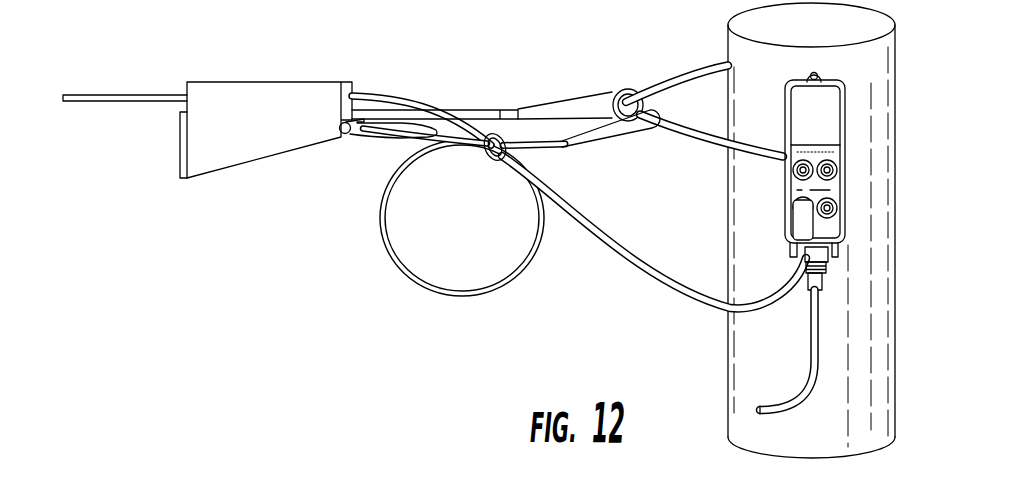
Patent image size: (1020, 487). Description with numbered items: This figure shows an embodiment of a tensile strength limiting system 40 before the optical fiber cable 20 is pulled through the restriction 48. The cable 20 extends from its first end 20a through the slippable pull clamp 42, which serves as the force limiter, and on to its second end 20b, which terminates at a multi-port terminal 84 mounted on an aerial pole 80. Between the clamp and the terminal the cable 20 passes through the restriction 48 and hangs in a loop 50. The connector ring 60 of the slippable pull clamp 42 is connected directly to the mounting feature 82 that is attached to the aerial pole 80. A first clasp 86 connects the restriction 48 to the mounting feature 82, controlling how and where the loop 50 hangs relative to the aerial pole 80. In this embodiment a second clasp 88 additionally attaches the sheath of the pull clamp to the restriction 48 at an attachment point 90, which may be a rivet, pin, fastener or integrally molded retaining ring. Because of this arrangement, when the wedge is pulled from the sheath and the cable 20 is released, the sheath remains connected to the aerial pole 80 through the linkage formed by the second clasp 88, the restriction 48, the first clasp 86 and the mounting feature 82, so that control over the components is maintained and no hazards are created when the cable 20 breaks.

The optical fiber cable 20 is at (410, 100).
The first end of optical fiber cable 20a is at (80, 95).
The second end of optical fiber cable 20b is at (806, 227).
The tensile strength limiting system 40 is at (584, 263).
The slippable pull clamp 42 is at (210, 135).
The restriction 48 is at (493, 134).
The loop 50 is at (443, 300).
The connector ring 60 is at (607, 89).
The aerial pole 80 is at (883, 330).
The mounting feature 82 is at (682, 70).
The multi-port terminal 84 is at (845, 118).
The first clasp 86 is at (627, 140).
The second clasp 88 is at (375, 141).
The attachment point 90 is at (341, 82).